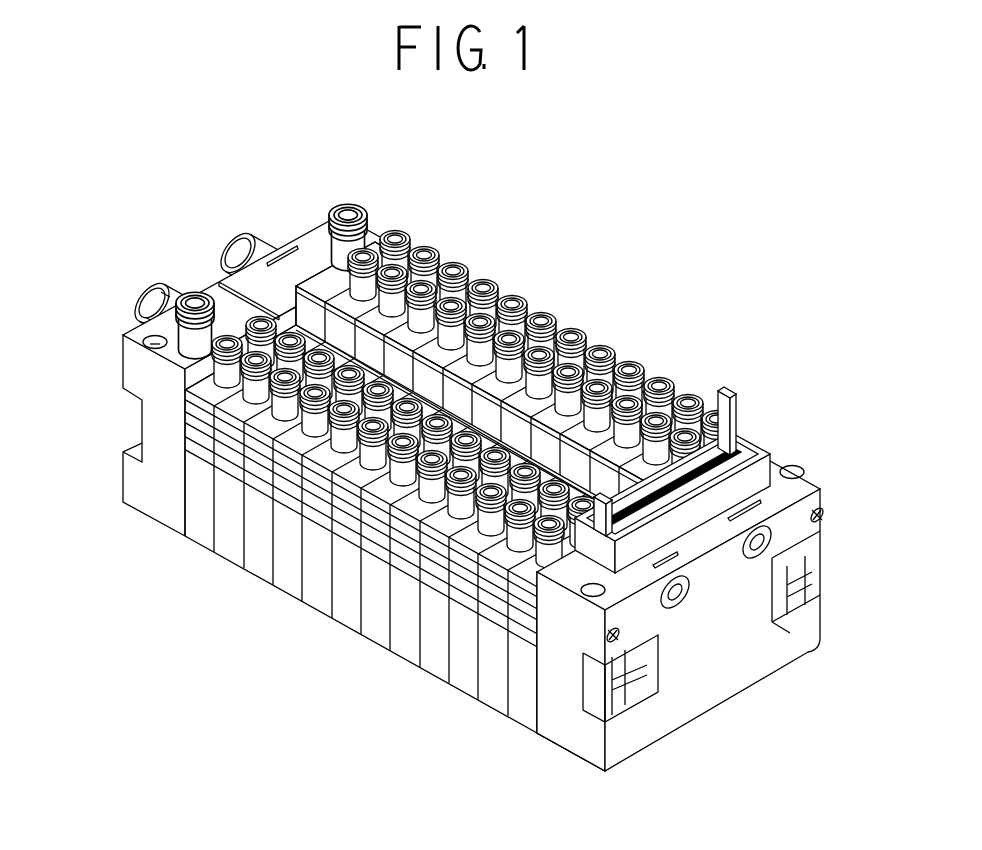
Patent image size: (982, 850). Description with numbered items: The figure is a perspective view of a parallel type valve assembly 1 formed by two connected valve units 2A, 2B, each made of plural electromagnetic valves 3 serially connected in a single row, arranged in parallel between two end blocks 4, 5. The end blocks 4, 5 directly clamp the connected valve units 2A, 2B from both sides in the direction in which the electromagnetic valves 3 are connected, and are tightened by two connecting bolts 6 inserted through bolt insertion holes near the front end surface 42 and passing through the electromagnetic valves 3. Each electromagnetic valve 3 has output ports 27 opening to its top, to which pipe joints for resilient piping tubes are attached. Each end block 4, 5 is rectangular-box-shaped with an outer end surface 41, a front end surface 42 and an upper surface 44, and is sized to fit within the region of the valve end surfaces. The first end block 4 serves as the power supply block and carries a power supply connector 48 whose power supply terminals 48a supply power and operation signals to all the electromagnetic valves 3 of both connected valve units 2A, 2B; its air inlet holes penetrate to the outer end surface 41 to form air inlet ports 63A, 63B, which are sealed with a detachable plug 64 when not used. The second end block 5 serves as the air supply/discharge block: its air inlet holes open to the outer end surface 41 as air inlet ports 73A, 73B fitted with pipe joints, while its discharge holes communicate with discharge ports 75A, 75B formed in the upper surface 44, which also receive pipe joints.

The parallel type valve assembly 1 is at (612, 260).
The connected valve unit 2A is at (293, 607).
The connected valve unit 2B is at (542, 290).
The electromagnetic valve 3 is at (458, 366).
The first end block 4 is at (759, 699).
The second end block 5 is at (331, 479).
The connecting bolt 6 is at (824, 514).
The output port 27 is at (598, 387).
The outer end surface 41 is at (805, 640).
The front end surface 42 is at (155, 513).
The upper surface 44 is at (312, 242).
The power supply connector 48 is at (743, 447).
The power supply terminal 48a is at (677, 433).
The air inlet port 63A is at (672, 608).
The air inlet port 63B is at (748, 563).
The plug 64 is at (766, 544).
The air inlet port 73A is at (165, 292).
The air inlet port 73B is at (243, 236).
The discharge port 75A is at (186, 322).
The discharge port 75B is at (368, 216).